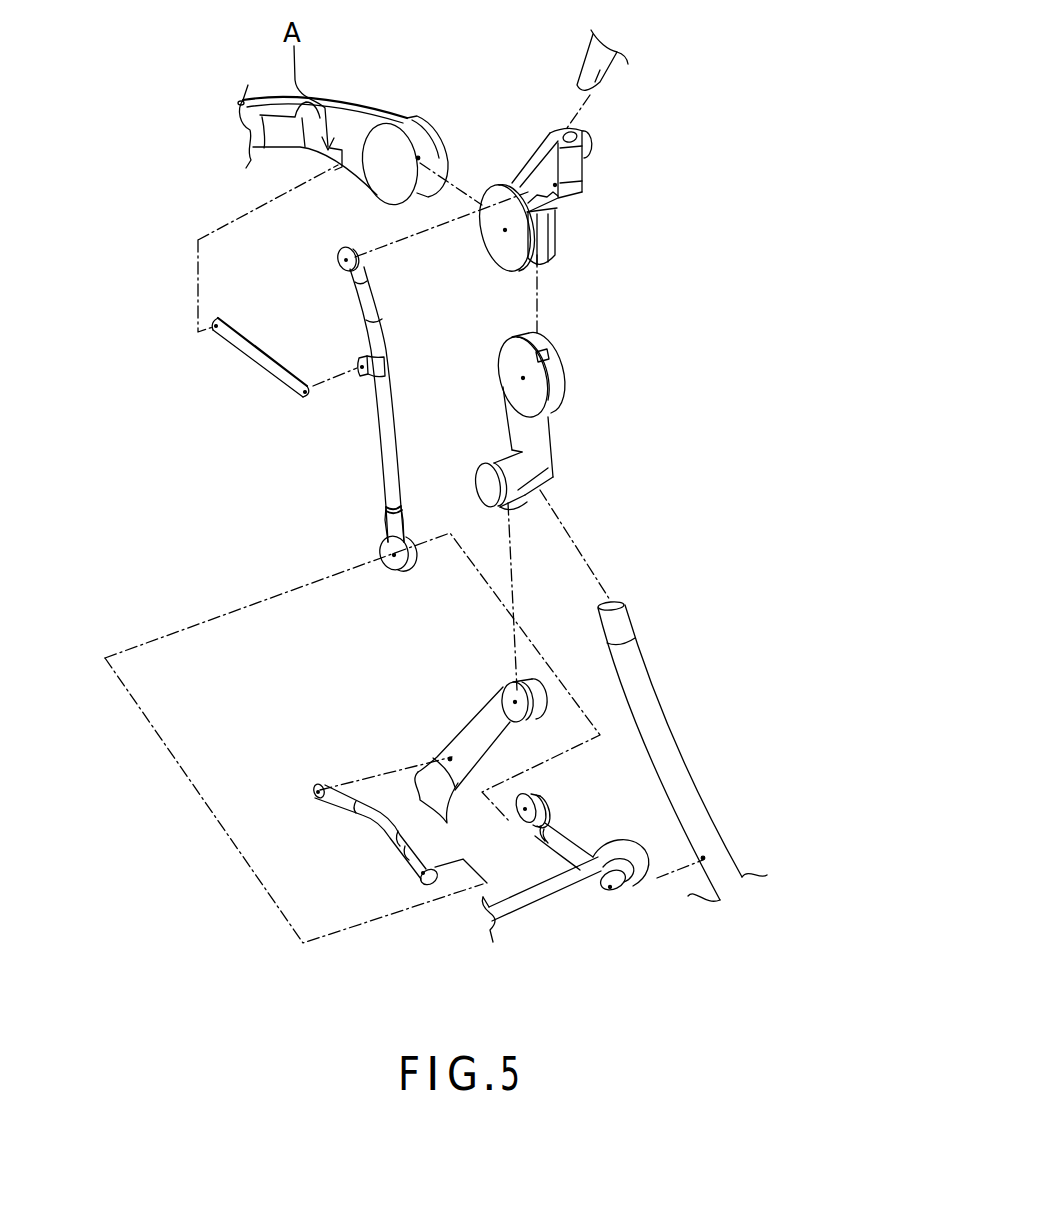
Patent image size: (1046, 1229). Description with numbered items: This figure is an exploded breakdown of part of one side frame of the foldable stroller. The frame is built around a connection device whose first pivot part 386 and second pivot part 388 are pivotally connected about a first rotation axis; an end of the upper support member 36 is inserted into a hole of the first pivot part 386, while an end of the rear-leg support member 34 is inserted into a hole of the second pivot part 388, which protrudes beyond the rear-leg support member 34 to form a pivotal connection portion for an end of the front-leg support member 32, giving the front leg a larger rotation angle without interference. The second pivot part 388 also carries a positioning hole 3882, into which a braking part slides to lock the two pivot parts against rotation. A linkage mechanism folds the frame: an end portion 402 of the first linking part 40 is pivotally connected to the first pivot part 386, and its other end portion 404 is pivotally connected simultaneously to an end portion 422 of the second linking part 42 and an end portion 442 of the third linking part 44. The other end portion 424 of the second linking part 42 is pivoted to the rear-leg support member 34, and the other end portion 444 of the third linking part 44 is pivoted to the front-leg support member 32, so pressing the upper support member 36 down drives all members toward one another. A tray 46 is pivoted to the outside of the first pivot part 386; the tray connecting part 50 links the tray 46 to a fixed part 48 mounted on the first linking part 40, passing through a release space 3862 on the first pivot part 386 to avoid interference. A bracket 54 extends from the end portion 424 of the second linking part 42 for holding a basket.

The front-leg support member 32 is at (476, 734).
The rear-leg support member 34 is at (642, 698).
The upper support member 36 is at (597, 84).
The first pivot part 386 is at (548, 167).
The release space 3862 is at (496, 246).
The second pivot part 388 is at (535, 448).
The positioning hole 3882 is at (550, 354).
The first linking part 40 is at (386, 444).
The end portion 402 is at (340, 257).
The other end portion 404 is at (380, 551).
The second linking part 42 is at (562, 843).
The end portion 422 is at (532, 800).
The other end portion 424 is at (598, 889).
The third linking part 44 is at (372, 817).
The end portion 442 is at (402, 850).
The other end portion 444 is at (315, 785).
The tray 46 is at (353, 108).
The fixed part 48 is at (385, 369).
The tray connecting part 50 is at (243, 348).
The bracket 54 is at (528, 903).